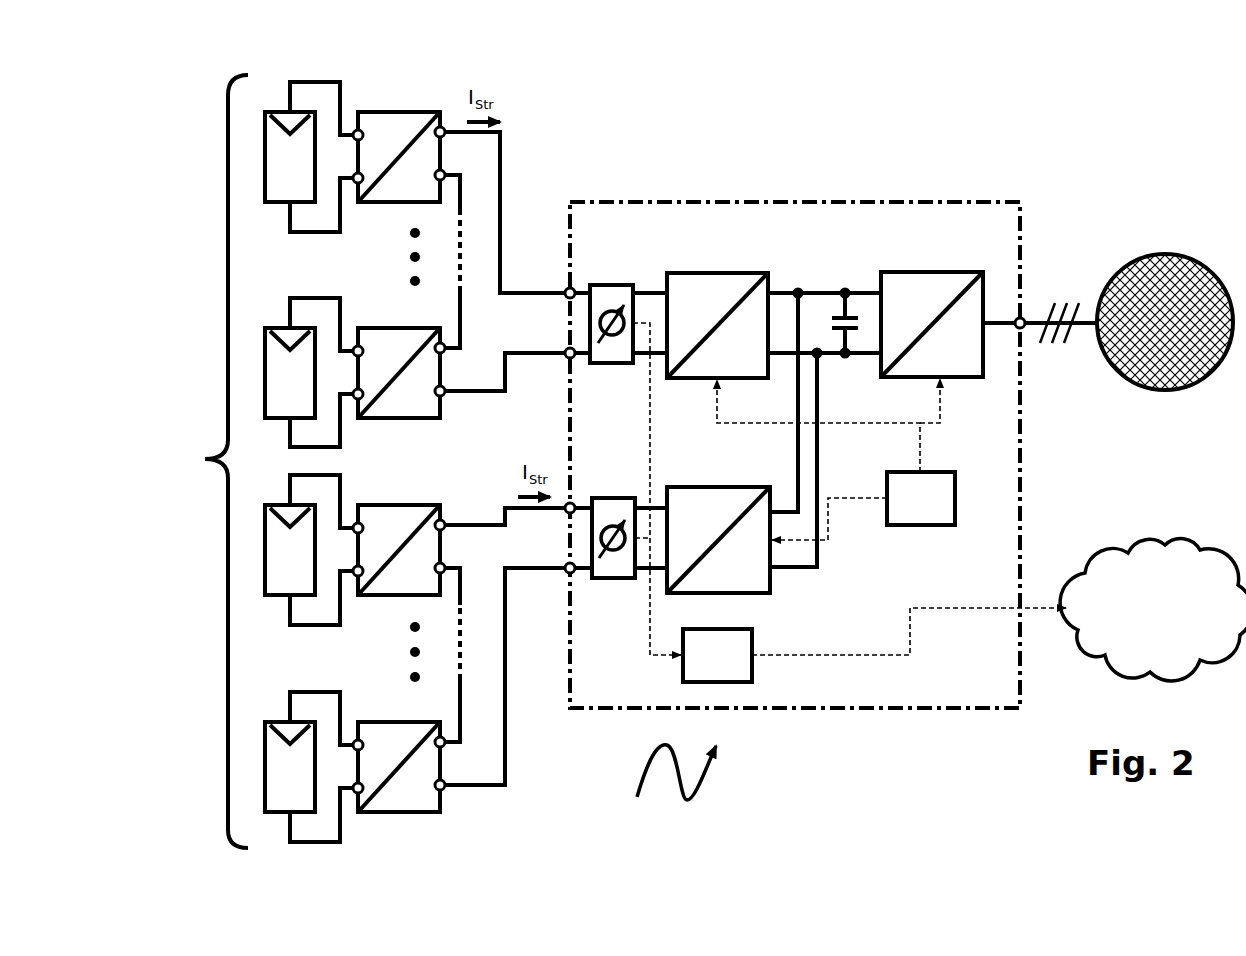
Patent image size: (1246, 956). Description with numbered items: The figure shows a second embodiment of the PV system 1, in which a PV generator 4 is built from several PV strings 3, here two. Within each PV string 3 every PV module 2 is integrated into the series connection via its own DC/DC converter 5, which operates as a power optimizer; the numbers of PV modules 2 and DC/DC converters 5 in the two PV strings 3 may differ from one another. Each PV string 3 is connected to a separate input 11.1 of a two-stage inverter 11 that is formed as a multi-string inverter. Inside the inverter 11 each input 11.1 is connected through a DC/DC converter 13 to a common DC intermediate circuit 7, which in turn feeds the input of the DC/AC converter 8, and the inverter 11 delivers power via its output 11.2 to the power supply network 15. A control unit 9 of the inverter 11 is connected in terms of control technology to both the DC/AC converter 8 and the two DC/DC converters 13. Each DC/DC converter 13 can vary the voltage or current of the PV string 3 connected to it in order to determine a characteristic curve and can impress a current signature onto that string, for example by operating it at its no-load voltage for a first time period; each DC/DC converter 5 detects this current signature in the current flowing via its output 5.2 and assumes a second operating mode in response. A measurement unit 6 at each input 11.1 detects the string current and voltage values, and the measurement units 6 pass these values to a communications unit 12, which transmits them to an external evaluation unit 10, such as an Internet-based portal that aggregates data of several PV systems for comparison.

The PV system 1 is at (669, 787).
The PV module 2 is at (290, 462).
The PV string 3 is at (274, 80).
The PV generator 4 is at (215, 461).
The DC/DC converter 5 is at (402, 202).
The output 5.2 is at (446, 175).
The measurement unit 6 is at (613, 497).
The DC intermediate circuit 7 is at (828, 310).
The DC/AC converter 8 is at (930, 272).
The control unit 9 is at (921, 498).
The external evaluation unit 10 is at (1153, 609).
The inverter 11 is at (752, 202).
The input 11.1 is at (565, 350).
The output 11.2 is at (1023, 318).
The communications unit 12 is at (717, 655).
The DC/DC converter 13 is at (718, 487).
The power supply network 15 is at (1163, 254).